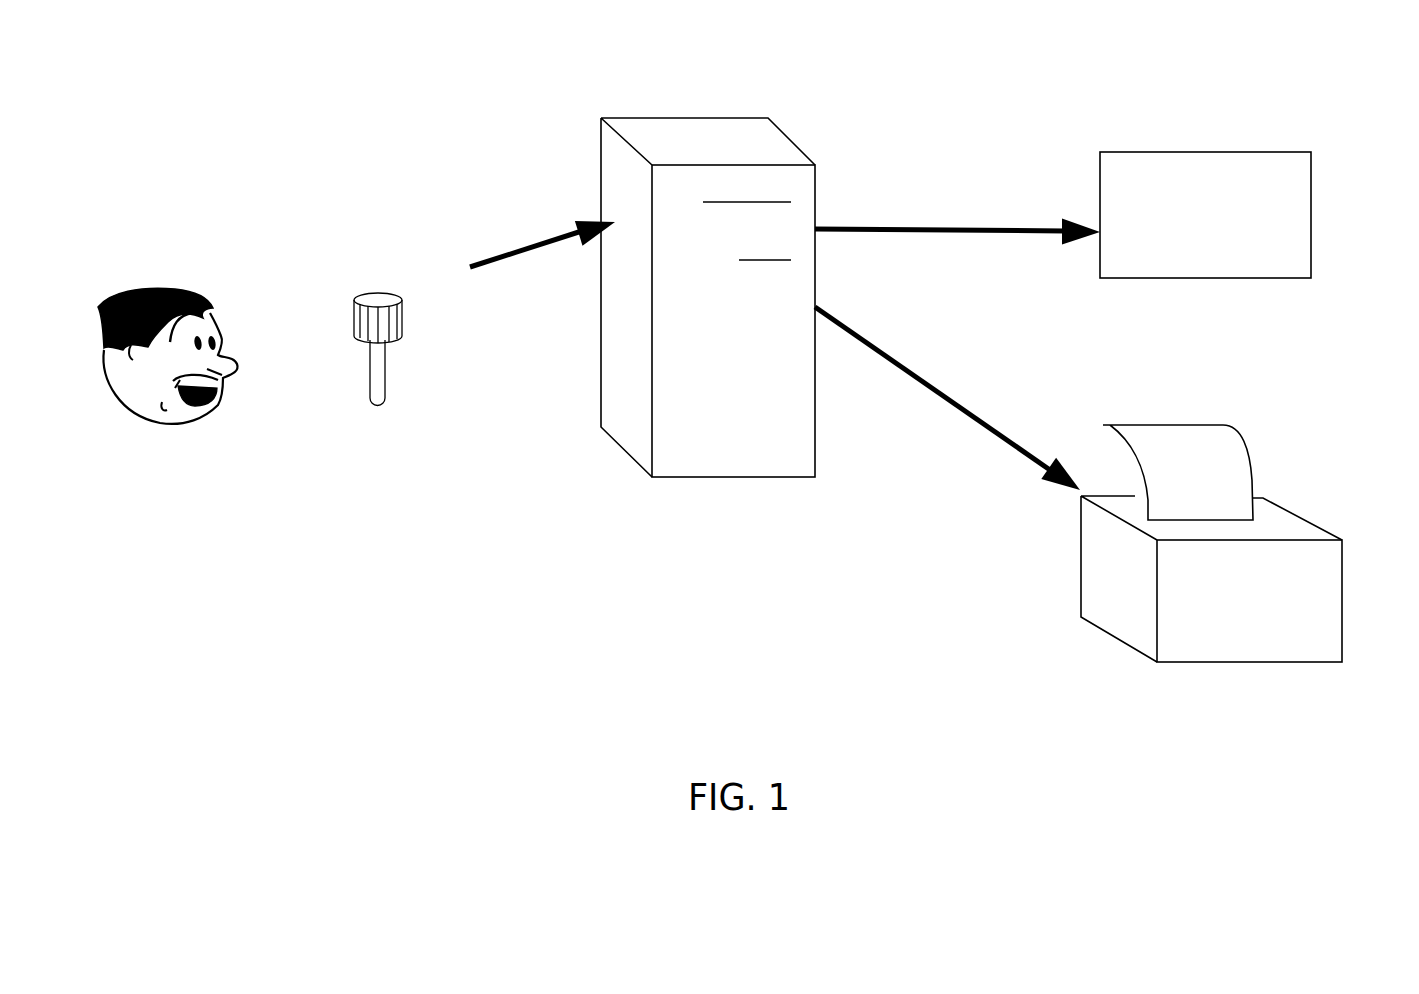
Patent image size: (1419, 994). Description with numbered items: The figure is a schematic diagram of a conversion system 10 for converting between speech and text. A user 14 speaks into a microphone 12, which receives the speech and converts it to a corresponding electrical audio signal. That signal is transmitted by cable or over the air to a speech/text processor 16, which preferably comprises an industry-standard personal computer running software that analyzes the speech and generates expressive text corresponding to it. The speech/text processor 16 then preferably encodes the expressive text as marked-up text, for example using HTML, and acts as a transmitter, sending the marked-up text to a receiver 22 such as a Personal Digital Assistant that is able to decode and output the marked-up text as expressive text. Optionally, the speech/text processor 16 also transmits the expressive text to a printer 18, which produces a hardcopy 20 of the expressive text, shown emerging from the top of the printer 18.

The conversion system 10 is at (352, 566).
The microphone 12 is at (363, 292).
The user 14 is at (203, 412).
The speech/text processor 16 is at (646, 123).
The printer 18 is at (1323, 582).
The hardcopy 20 is at (1148, 448).
The receiver 22 is at (1140, 173).